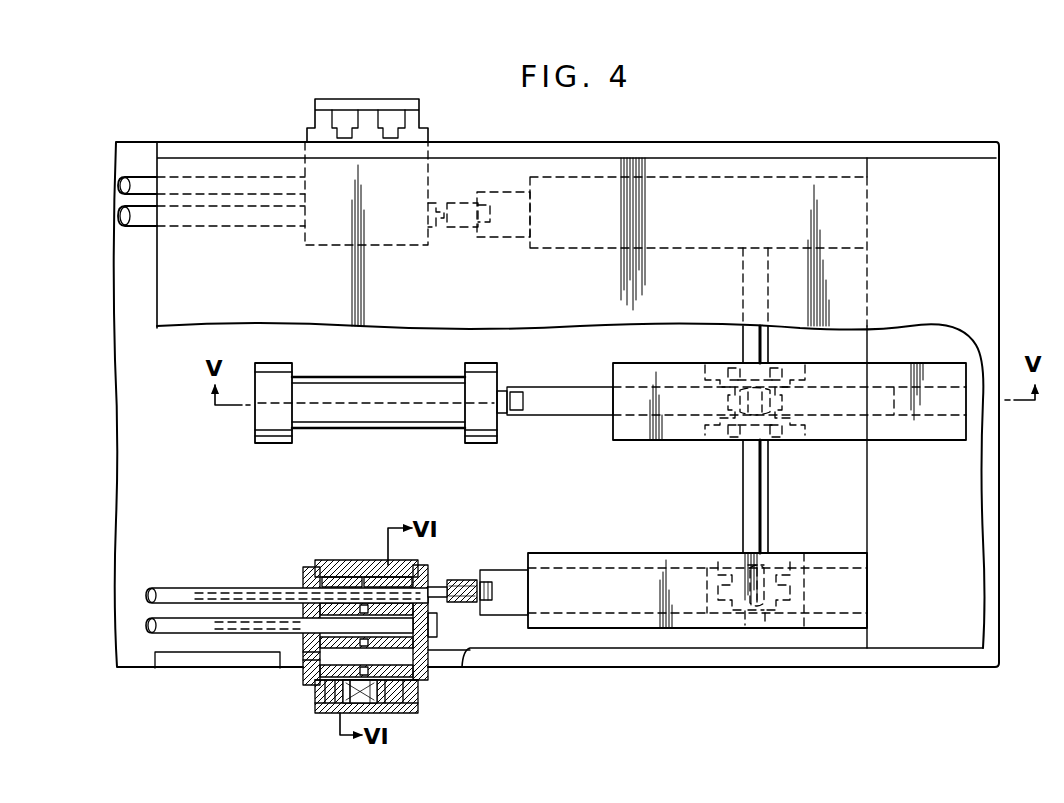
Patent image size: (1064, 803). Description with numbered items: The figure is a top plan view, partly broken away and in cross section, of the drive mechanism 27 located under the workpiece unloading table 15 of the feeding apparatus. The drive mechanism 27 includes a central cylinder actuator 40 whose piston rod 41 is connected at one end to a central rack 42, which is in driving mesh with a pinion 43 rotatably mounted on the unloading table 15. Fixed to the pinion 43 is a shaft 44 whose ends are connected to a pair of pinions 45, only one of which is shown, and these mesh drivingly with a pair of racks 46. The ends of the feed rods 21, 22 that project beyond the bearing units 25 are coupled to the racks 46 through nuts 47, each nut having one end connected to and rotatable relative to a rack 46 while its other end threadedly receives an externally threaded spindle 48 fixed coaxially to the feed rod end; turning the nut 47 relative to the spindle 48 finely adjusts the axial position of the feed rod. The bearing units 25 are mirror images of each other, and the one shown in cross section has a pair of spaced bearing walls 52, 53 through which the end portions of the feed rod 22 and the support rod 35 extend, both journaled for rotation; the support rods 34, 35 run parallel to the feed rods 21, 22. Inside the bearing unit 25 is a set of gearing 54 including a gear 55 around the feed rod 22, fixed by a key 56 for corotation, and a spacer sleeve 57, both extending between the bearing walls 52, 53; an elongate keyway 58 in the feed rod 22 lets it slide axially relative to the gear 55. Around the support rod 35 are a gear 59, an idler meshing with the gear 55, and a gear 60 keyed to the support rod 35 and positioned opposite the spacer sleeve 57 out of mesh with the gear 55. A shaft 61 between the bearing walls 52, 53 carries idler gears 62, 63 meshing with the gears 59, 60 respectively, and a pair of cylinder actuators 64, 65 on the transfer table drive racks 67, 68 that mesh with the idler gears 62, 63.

The workpiece unloading table 15 is at (708, 165).
The feed rod 21 is at (130, 222).
The feed rod 22 is at (175, 590).
The bearing unit 25 is at (437, 157).
The drive mechanism 27 is at (645, 448).
The support rod 34 is at (130, 184).
The support rod 35 is at (180, 634).
The central cylinder actuator 40 is at (365, 420).
The piston rod 41 is at (500, 416).
The central rack 42 is at (584, 390).
The pinion 43 is at (785, 372).
The shaft 44 is at (742, 338).
The pinion 45 is at (783, 561).
The rack 46 is at (500, 240).
The nut 47 is at (458, 230).
The externally threaded spindle 48 is at (440, 230).
The bearing wall 52 is at (436, 588).
The bearing wall 53 is at (305, 575).
The set of gearing 54 is at (334, 578).
The gear 55 is at (380, 578).
The key 56 is at (362, 580).
The spacer sleeve 57 is at (324, 578).
The keyway 58 is at (240, 594).
The gear 59 is at (440, 624).
The gear 60 is at (306, 656).
The shaft 61 is at (436, 660).
The idler gear 62 is at (418, 695).
The idler gear 63 is at (318, 686).
The cylinder actuator 64 is at (410, 712).
The cylinder actuator 65 is at (322, 714).
The rack 67 is at (395, 714).
The rack 68 is at (346, 714).